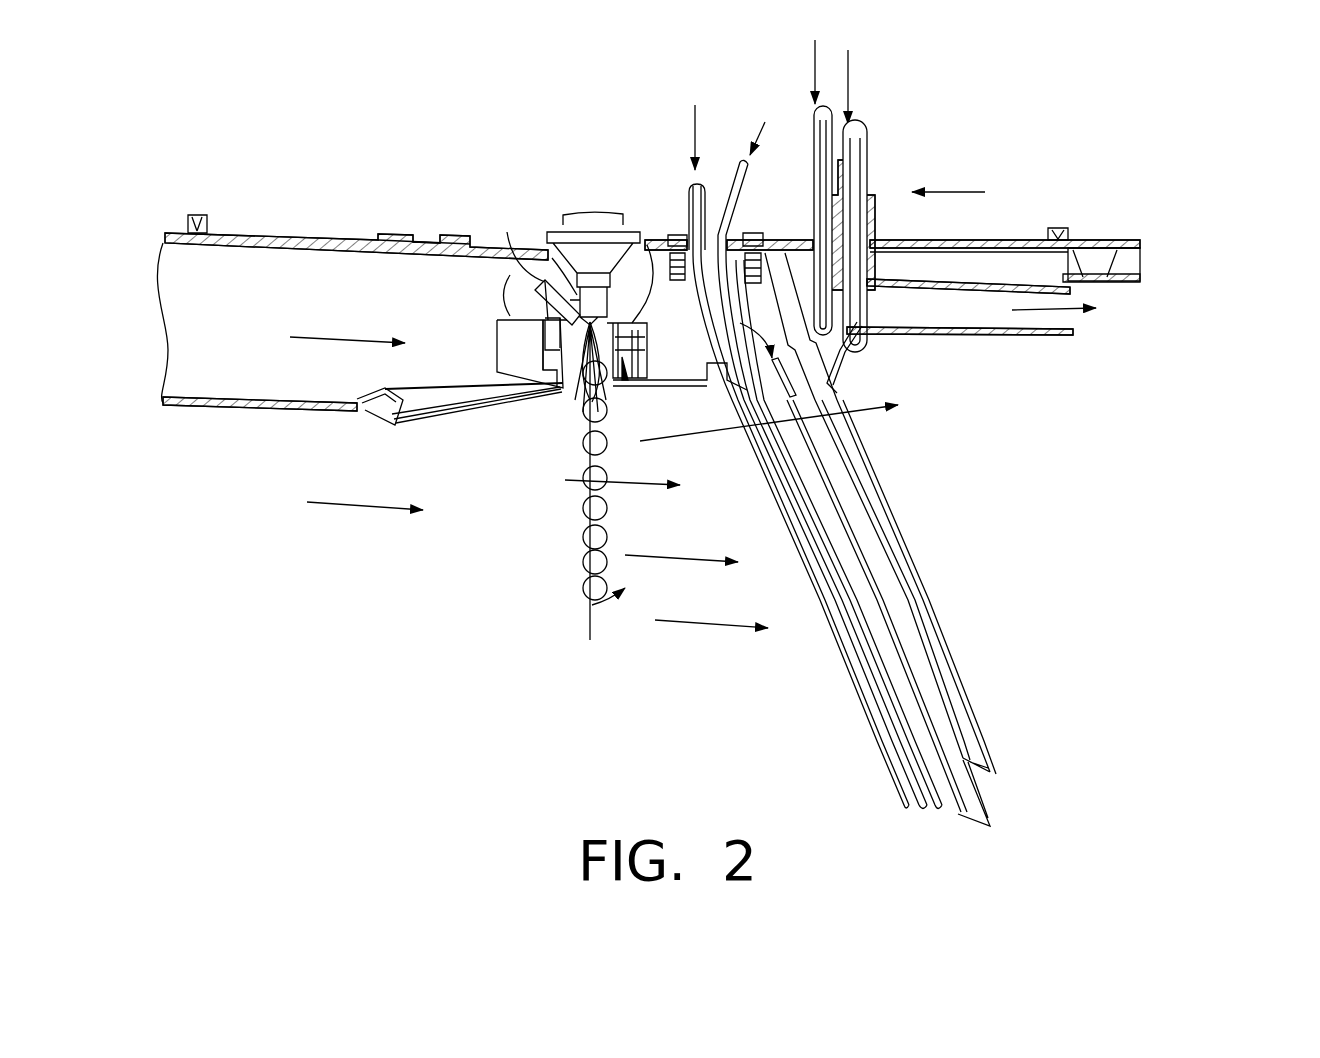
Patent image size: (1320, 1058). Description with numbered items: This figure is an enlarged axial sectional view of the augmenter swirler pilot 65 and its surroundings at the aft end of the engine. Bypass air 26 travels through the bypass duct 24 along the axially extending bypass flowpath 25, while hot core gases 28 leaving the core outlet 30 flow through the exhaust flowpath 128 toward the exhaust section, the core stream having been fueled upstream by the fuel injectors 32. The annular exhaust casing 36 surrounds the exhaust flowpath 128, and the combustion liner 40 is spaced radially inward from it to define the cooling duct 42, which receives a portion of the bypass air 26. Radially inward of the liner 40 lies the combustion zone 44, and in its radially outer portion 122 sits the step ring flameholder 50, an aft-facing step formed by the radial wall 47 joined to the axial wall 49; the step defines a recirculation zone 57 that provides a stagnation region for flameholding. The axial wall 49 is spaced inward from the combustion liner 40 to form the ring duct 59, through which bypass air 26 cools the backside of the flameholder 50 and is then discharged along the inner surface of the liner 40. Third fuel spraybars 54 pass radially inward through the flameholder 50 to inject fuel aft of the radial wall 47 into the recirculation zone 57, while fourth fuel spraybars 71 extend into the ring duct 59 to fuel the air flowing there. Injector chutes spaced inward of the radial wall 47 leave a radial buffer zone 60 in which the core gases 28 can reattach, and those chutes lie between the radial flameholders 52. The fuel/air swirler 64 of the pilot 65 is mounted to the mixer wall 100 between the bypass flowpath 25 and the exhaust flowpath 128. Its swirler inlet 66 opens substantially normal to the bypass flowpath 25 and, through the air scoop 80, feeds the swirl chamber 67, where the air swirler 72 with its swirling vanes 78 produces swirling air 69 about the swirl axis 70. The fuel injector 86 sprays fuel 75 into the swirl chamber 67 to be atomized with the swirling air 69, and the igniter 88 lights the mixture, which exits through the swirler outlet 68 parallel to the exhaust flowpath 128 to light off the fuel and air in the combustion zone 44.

The bypass duct 24 is at (228, 330).
The bypass flowpath 25 is at (267, 257).
The bypass air 26 is at (325, 350).
The core gases 28 is at (352, 507).
The core outlet 30 is at (368, 468).
The fuel injectors 32 is at (386, 246).
The exhaust casing 36 is at (1138, 240).
The combustion liner 40 is at (1134, 282).
The cooling duct 42 is at (1125, 262).
The combustion zone 44 is at (1108, 502).
The radial wall 47 is at (850, 345).
The axial wall 49 is at (983, 336).
The step ring flameholder 50 is at (1060, 345).
The radial flameholders 52 is at (1000, 742).
The third fuel spraybars 54 is at (860, 140).
The recirculation zone 57 is at (950, 368).
The ring duct 59 is at (956, 325).
The radial buffer zone 60 is at (890, 470).
The fuel/air swirler 64 is at (650, 240).
The augmenter swirler pilot 65 is at (530, 195).
The swirler inlet 66 is at (495, 358).
The swirl chamber 67 is at (623, 385).
The swirler outlet 68 is at (575, 398).
The swirling air 69 is at (602, 440).
The swirl axis 70 is at (585, 482).
The fourth fuel spraybars 71 is at (808, 118).
The air swirler 72 is at (623, 392).
The fuel 75 is at (615, 338).
The swirling vanes 78 is at (543, 330).
The air scoop 80 is at (522, 305).
The fuel injector 86 is at (647, 245).
The igniter 88 is at (512, 250).
The mixer wall 100 is at (493, 410).
The radially outer portion 122 is at (1090, 357).
The exhaust flowpath 128 is at (1247, 670).